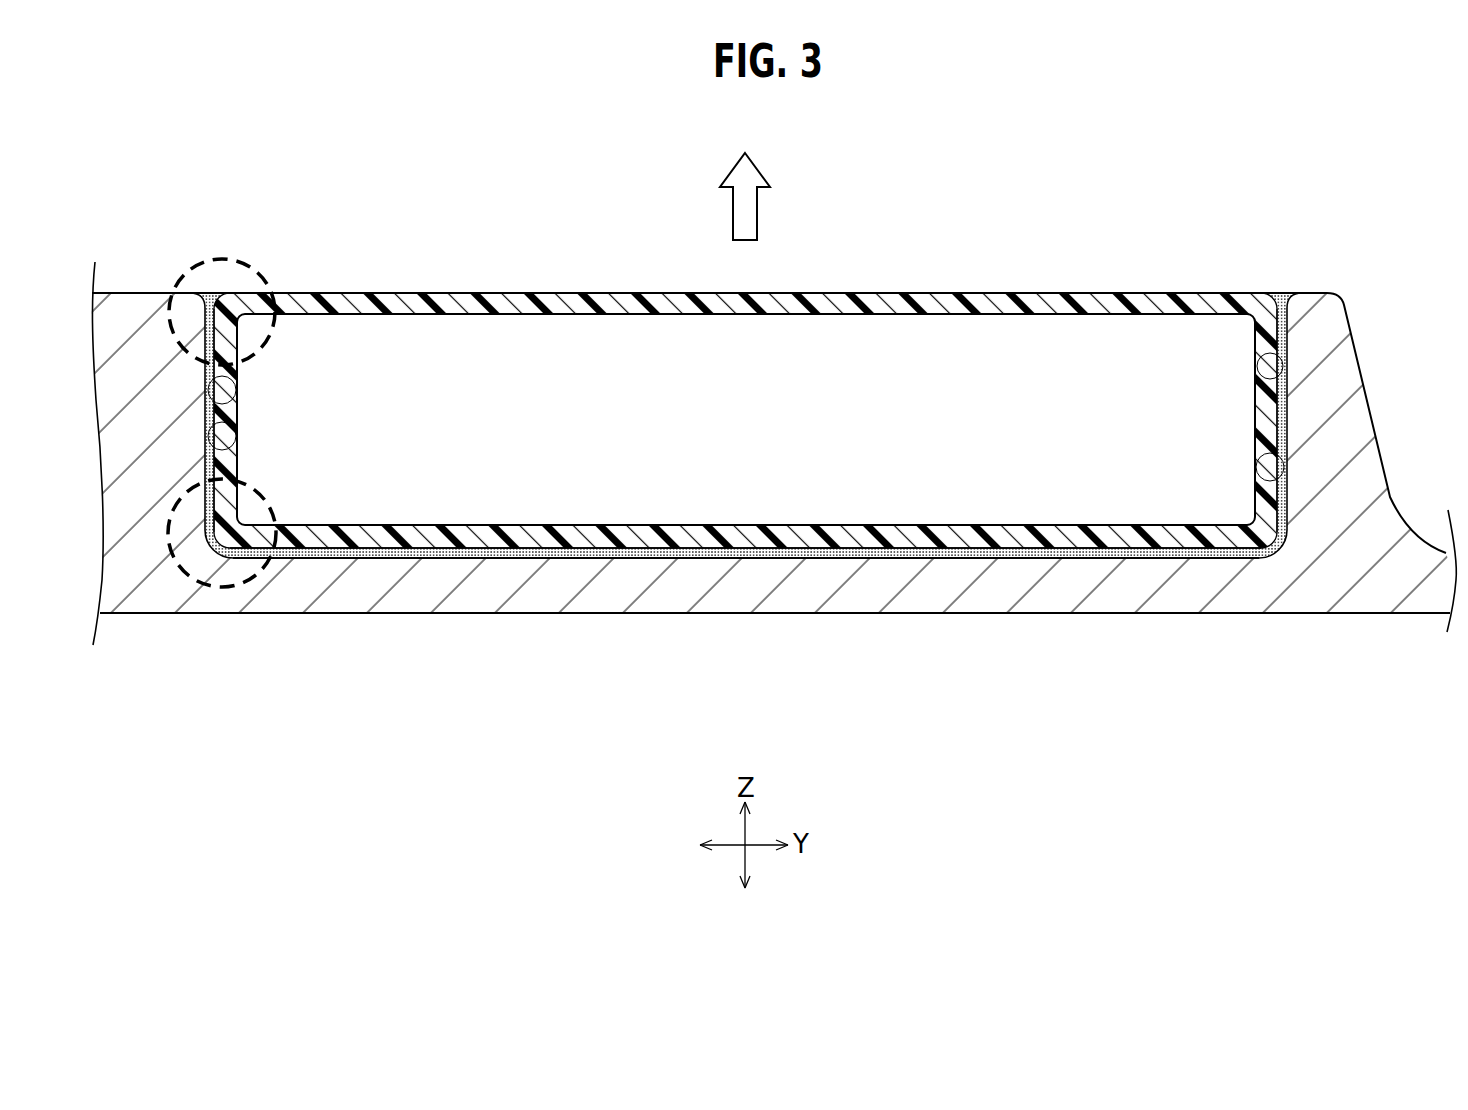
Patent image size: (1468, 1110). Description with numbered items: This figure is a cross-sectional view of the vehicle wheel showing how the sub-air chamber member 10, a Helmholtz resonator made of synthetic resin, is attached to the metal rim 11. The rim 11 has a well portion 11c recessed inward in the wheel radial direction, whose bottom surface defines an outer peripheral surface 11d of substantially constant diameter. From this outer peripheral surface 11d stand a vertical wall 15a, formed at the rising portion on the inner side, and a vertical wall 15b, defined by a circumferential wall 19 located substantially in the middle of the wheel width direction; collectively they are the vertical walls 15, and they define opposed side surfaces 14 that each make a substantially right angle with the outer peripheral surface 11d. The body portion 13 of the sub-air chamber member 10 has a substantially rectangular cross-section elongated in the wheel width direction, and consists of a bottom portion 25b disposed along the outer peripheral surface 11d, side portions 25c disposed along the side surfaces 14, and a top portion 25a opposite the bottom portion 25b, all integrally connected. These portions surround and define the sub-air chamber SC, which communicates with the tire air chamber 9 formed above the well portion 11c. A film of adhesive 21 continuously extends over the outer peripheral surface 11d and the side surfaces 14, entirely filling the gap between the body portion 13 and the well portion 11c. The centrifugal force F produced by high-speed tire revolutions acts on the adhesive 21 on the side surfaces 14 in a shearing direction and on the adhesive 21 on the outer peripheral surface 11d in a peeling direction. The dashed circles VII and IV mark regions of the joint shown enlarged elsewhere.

The tire air chamber 9 is at (670, 222).
The sub-air chamber member 10 is at (746, 232).
The body portion 13 is at (847, 268).
The rim 11 is at (138, 303).
The well portion 11c is at (746, 610).
The outer peripheral surface 11d is at (743, 538).
The side surfaces 14 is at (225, 462).
The vertical walls 15 is at (806, 335).
The vertical wall 15a is at (207, 377).
The vertical wall 15b is at (1290, 345).
The circumferential wall 19 is at (1347, 378).
The adhesive 21 is at (705, 553).
The top portion 25a is at (785, 307).
The bottom portion 25b is at (803, 530).
The side portions 25c is at (228, 423).
The sub-air chamber SC is at (750, 430).
The centrifugal force F is at (752, 163).
The enlarged region VII is at (340, 370).
The enlarged region IV is at (284, 496).